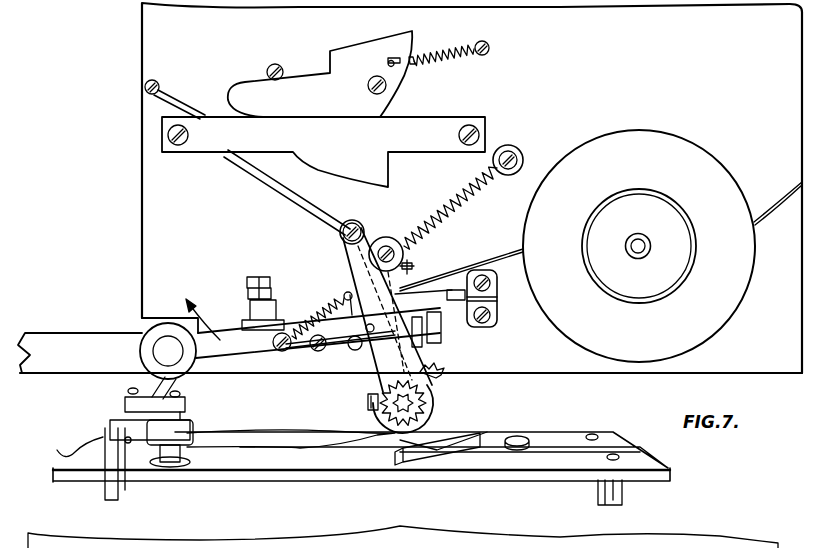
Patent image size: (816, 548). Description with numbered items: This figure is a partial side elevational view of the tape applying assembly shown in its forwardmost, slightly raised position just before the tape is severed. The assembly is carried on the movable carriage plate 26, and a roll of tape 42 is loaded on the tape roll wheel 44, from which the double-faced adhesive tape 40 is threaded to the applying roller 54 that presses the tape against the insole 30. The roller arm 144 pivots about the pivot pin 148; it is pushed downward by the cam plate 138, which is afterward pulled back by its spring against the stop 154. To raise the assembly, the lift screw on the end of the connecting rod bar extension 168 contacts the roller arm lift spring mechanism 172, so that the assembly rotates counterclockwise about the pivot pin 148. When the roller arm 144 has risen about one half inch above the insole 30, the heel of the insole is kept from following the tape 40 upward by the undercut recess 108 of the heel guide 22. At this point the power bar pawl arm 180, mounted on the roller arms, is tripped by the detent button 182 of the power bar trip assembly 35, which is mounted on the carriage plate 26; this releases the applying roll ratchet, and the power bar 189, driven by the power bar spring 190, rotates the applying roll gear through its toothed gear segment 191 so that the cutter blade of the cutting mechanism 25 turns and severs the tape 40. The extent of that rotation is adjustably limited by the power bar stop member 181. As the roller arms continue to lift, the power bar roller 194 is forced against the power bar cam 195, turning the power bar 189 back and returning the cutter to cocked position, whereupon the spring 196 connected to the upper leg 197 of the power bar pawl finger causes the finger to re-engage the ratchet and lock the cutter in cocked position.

The carriage plate 26 is at (728, 102).
The power bar cam 195 is at (360, 144).
The cam plate 138 is at (352, 104).
The stop 154 is at (284, 56).
The power bar spring 190 is at (345, 254).
The roll of tape 42 is at (653, 161).
The tape roll wheel 44 is at (638, 236).
The detent button 182 is at (458, 292).
The power bar trip assembly 35 is at (499, 327).
The power bar roller 194 is at (394, 214).
The power bar 189 is at (420, 370).
The toothed gear segment 191 is at (432, 377).
The applying roller 54 is at (436, 403).
The cutting mechanism 25 is at (364, 403).
The spring 196 is at (340, 300).
The upper leg 197 is at (350, 289).
The power bar stop member 181 is at (413, 264).
The adhesive tape 40 is at (484, 262).
The heel guide assembly 22 is at (447, 462).
The undercut recess 108 is at (403, 452).
The insole 30 is at (378, 443).
The pivot pin 148 is at (165, 350).
The connecting rod bar extension 168 is at (110, 356).
The roller arm 144 is at (262, 356).
The roller arm lift spring mechanism 172 is at (263, 268).
The power bar pawl arm 180 is at (428, 312).